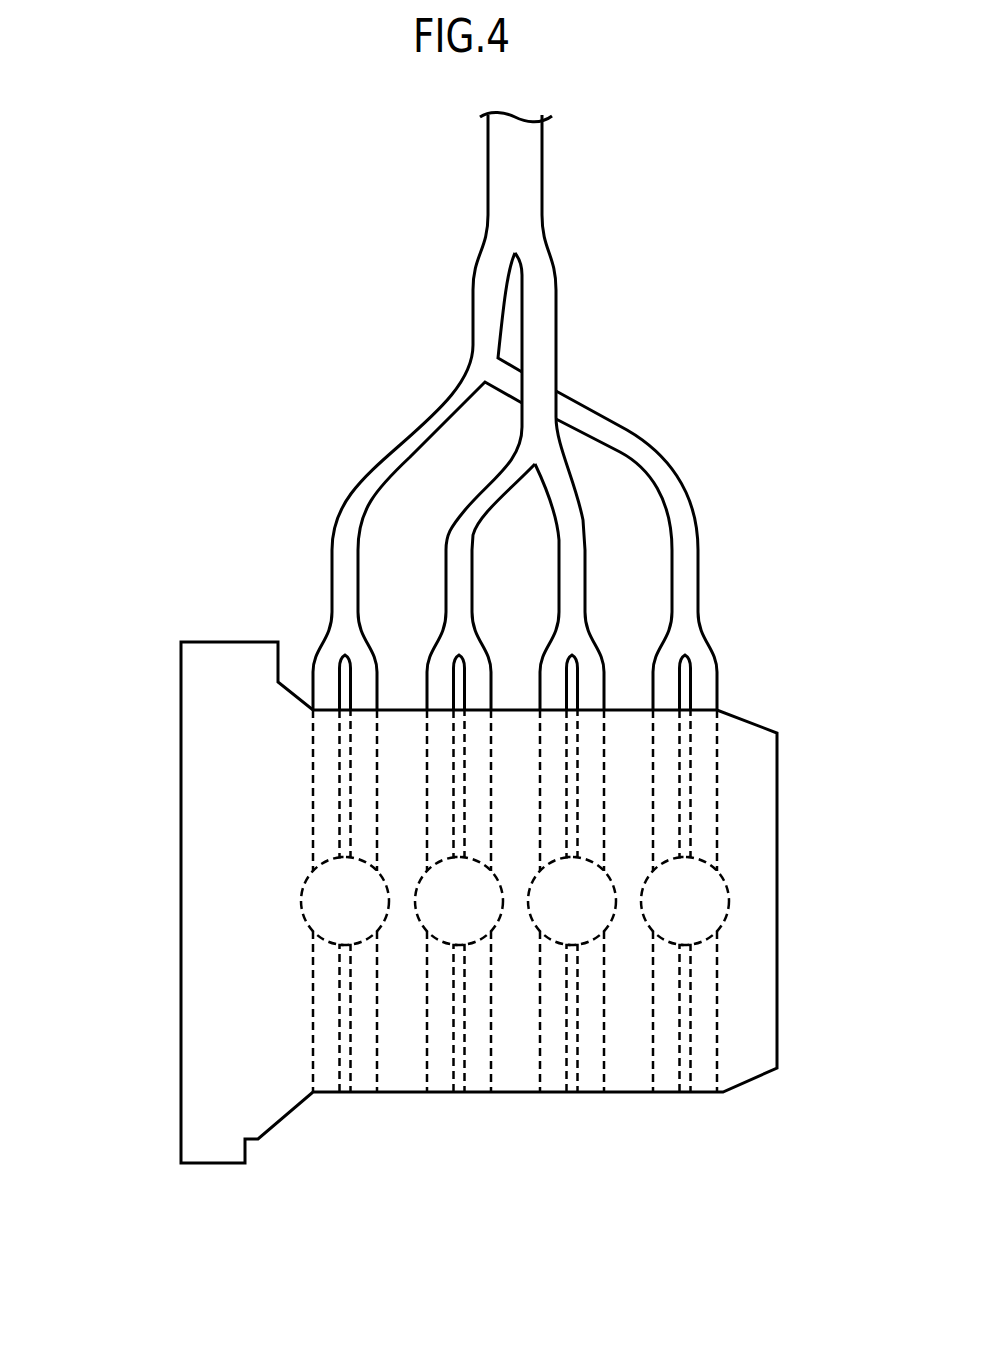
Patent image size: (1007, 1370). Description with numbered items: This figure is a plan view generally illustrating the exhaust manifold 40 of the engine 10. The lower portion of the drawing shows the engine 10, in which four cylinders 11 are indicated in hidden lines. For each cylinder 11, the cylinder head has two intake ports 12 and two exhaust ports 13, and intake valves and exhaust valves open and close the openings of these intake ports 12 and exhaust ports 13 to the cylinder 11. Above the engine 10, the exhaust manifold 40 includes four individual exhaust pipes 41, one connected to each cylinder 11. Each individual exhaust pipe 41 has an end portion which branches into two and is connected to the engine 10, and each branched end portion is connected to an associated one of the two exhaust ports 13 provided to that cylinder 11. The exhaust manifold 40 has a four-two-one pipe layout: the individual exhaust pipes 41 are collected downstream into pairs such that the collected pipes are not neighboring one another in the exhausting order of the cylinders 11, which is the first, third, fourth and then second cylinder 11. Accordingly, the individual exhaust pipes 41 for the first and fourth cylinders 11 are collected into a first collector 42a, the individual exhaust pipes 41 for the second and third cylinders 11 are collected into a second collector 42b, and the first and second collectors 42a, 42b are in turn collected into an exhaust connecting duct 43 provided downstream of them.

The engine 10 is at (227, 642).
The cylinder 11 is at (365, 897).
The intake port 12 is at (700, 1018).
The exhaust port 13 is at (700, 788).
The exhaust manifold 40 is at (422, 250).
The individual exhaust pipe 41 is at (358, 579).
The first collector 42a is at (473, 318).
The second collector 42b is at (557, 318).
The exhaust connecting duct 43 is at (542, 160).